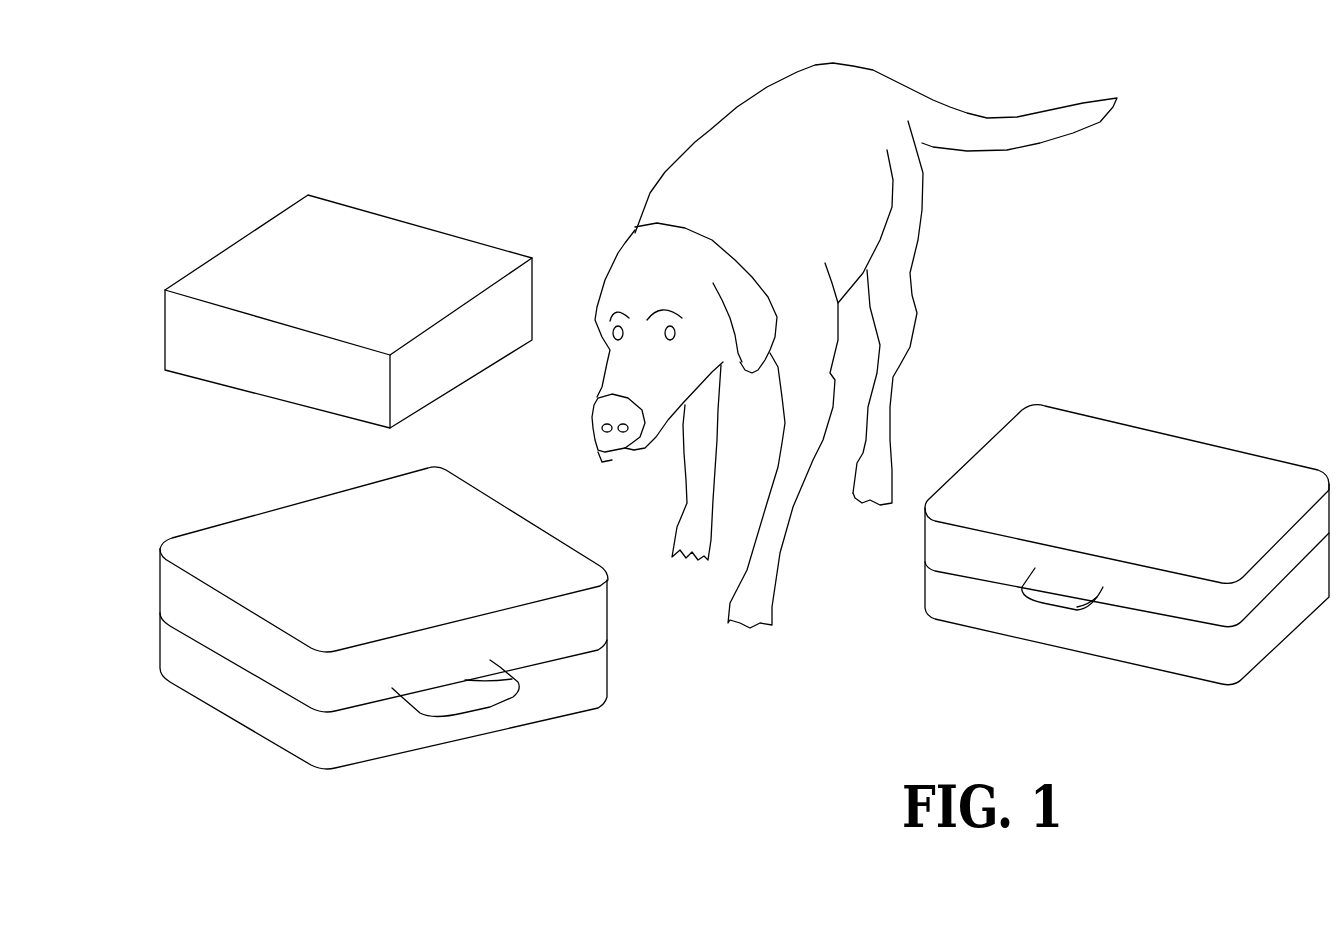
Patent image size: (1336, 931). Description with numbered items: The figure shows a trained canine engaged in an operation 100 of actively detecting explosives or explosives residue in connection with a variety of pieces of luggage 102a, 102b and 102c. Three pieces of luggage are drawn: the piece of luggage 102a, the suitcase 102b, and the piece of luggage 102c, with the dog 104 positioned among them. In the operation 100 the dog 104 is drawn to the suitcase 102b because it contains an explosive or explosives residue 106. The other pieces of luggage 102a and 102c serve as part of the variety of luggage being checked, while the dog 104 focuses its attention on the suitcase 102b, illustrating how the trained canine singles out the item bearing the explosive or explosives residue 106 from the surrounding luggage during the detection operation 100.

The operation 100 is at (1157, 70).
The piece of luggage 102a is at (400, 290).
The suitcase 102b is at (420, 584).
The piece of luggage 102c is at (1127, 545).
The dog 104 is at (828, 195).
The explosive or explosives residue 106 is at (468, 681).